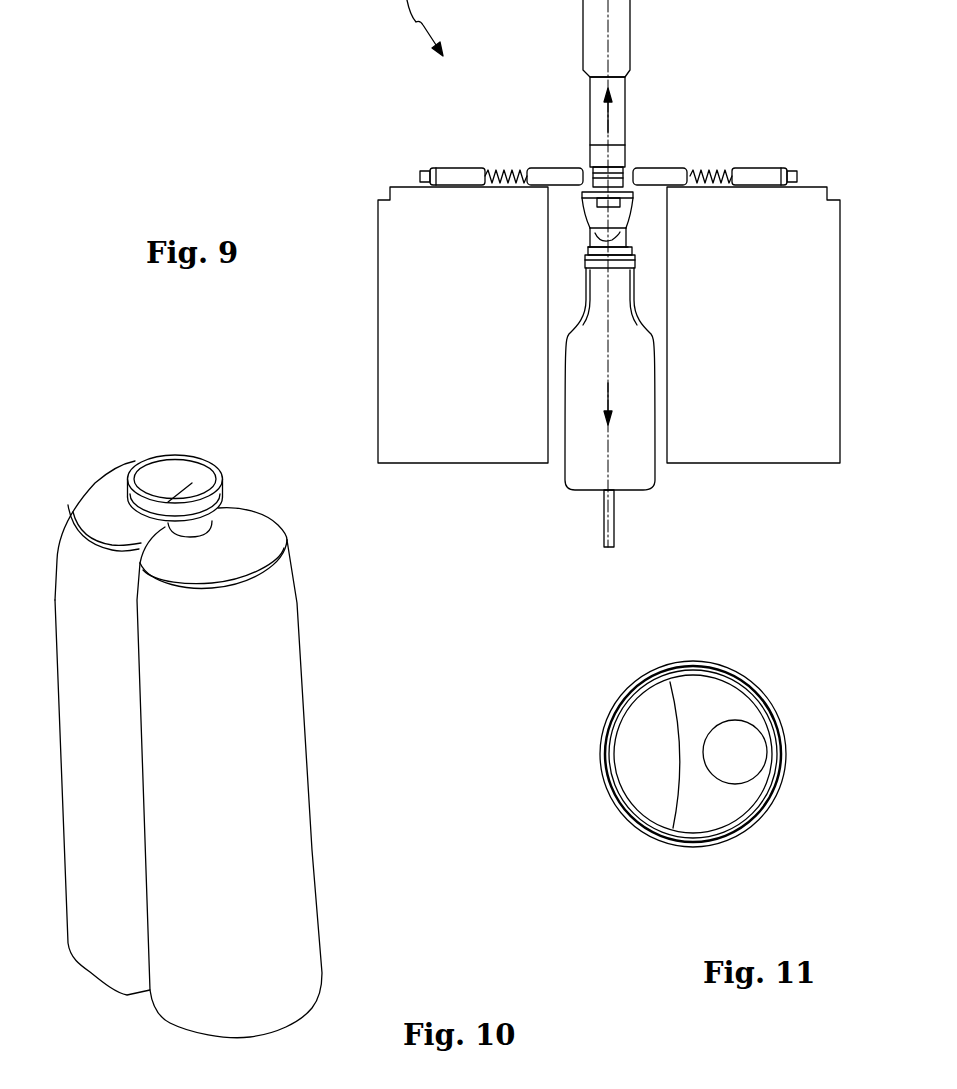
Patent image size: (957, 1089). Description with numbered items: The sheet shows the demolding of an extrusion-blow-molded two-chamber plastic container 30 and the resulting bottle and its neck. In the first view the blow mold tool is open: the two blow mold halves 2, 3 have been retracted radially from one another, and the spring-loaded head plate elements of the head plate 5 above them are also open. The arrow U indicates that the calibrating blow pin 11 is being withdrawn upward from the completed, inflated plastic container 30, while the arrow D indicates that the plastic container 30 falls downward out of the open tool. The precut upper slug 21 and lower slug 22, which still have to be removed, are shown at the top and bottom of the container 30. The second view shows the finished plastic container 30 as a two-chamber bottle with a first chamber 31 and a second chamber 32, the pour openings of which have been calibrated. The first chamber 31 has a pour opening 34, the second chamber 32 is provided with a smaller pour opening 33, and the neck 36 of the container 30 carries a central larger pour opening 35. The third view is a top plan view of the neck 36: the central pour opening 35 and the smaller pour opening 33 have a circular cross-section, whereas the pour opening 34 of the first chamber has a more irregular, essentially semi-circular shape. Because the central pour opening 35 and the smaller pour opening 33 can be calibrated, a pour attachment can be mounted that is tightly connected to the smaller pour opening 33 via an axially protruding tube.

In FIG. 9, the blow mold half 2 is at (388, 350).
In FIG. 9, the blow mold half 3 is at (770, 449).
In FIG. 9, the head plate 5 is at (548, 177).
In FIG. 9, the calibrating blow pin 11 is at (622, 92).
In FIG. 9, the upper slug 21 is at (620, 215).
In FIG. 9, the lower slug 22 is at (612, 525).
In FIG. 9, the plastic container 30 is at (575, 475).
In FIG. 10, the plastic container 30 is at (116, 436).
In FIG. 10, the first chamber 31 is at (107, 977).
In FIG. 10, the second chamber 32 is at (300, 903).
In FIG. 10, the smaller pour opening 33 is at (270, 562).
In FIG. 11, the smaller pour opening 33 is at (748, 747).
In FIG. 10, the pour opening 34 is at (162, 497).
In FIG. 11, the pour opening 34 is at (627, 750).
In FIG. 10, the central pour opening 35 is at (205, 472).
In FIG. 11, the central pour opening 35 is at (716, 700).
In FIG. 10, the neck 36 is at (223, 485).
In FIG. 11, the neck 36 is at (612, 807).
In FIG. 9, the arrow U is at (600, 118).
In FIG. 9, the arrow D is at (608, 397).